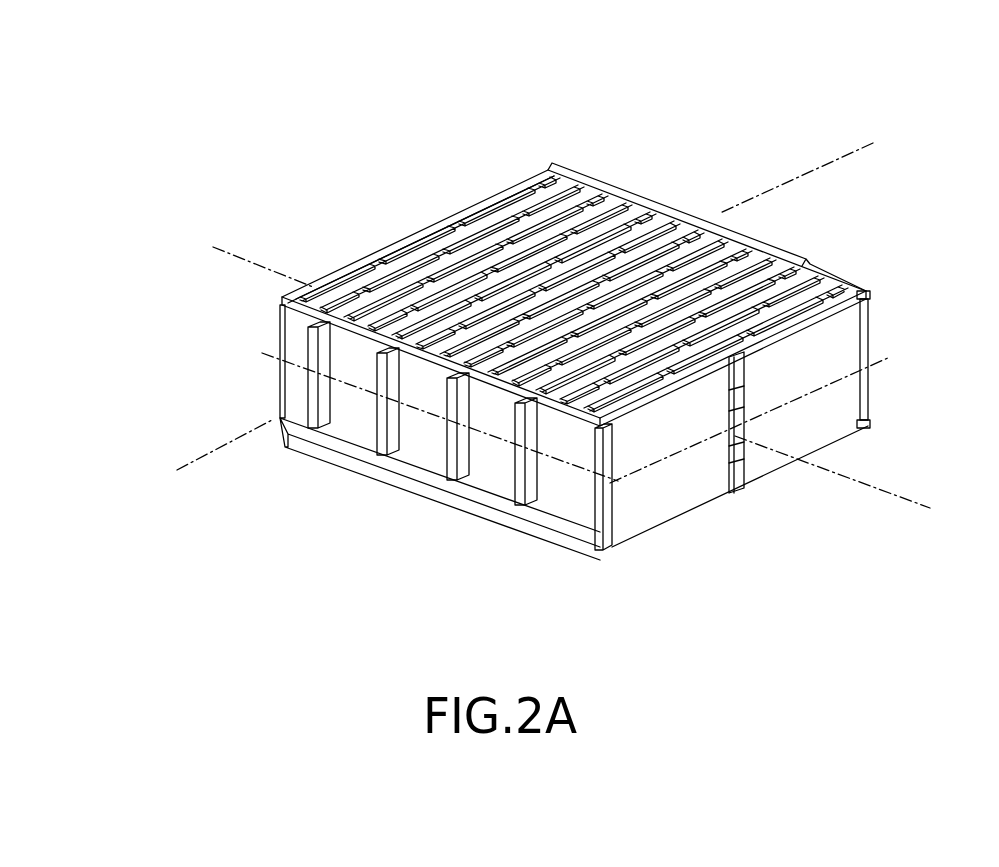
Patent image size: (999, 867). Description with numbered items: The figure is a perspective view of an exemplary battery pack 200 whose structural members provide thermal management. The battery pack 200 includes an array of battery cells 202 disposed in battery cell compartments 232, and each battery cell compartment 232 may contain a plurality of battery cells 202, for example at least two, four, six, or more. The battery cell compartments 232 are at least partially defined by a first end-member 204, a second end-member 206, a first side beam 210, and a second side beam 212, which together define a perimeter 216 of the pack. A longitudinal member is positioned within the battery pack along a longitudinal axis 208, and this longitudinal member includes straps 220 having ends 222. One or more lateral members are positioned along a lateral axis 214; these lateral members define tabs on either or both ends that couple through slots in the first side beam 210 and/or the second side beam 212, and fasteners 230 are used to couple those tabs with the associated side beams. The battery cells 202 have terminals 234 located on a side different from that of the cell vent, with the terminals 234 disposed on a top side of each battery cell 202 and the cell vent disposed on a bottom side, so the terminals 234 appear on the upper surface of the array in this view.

The battery pack 200 is at (806, 99).
The battery cells 202 is at (668, 157).
The first end-member 204 is at (480, 197).
The second end-member 206 is at (638, 503).
The longitudinal axis 208 is at (237, 253).
The first side beam 210 is at (417, 487).
The second side beam 212 is at (602, 183).
The lateral axis 214 is at (223, 448).
The perimeter 216 is at (886, 353).
The straps 220 is at (745, 408).
The ends 222 is at (745, 390).
The fasteners 230 is at (385, 453).
The battery cell compartments 232 is at (663, 207).
The terminals 234 is at (837, 283).